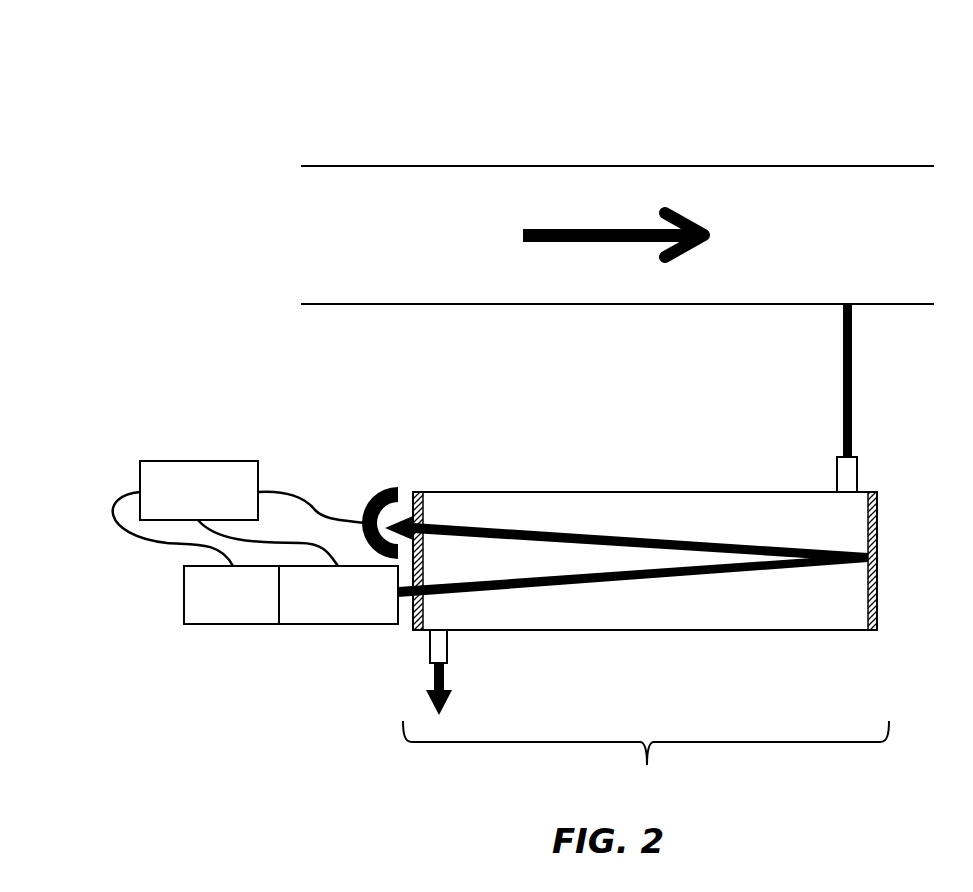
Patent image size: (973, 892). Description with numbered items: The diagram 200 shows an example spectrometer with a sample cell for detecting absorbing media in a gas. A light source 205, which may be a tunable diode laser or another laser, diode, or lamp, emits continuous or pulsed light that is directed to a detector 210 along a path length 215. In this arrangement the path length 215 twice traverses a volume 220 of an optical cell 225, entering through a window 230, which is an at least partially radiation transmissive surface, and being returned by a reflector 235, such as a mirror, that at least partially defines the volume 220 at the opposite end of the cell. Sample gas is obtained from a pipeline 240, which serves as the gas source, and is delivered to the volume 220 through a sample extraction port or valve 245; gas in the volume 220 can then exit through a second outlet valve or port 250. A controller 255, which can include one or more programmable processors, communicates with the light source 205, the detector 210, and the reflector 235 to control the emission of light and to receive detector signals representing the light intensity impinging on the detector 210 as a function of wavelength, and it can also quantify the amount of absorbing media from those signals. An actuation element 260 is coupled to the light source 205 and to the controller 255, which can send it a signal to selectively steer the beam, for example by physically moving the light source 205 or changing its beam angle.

The spectrometer diagram 200 is at (156, 100).
The light source 205 is at (338, 595).
The detector 210 is at (378, 487).
The path length 215 is at (705, 554).
The volume 220 is at (645, 561).
The optical cell 225 is at (646, 757).
The window 230 is at (411, 623).
The reflector 235 is at (873, 488).
The pipeline 240 is at (617, 235).
The sample extraction port or valve 245 is at (835, 475).
The outlet valve or port 250 is at (427, 645).
The controller 255 is at (239, 513).
The actuation element 260 is at (231, 595).